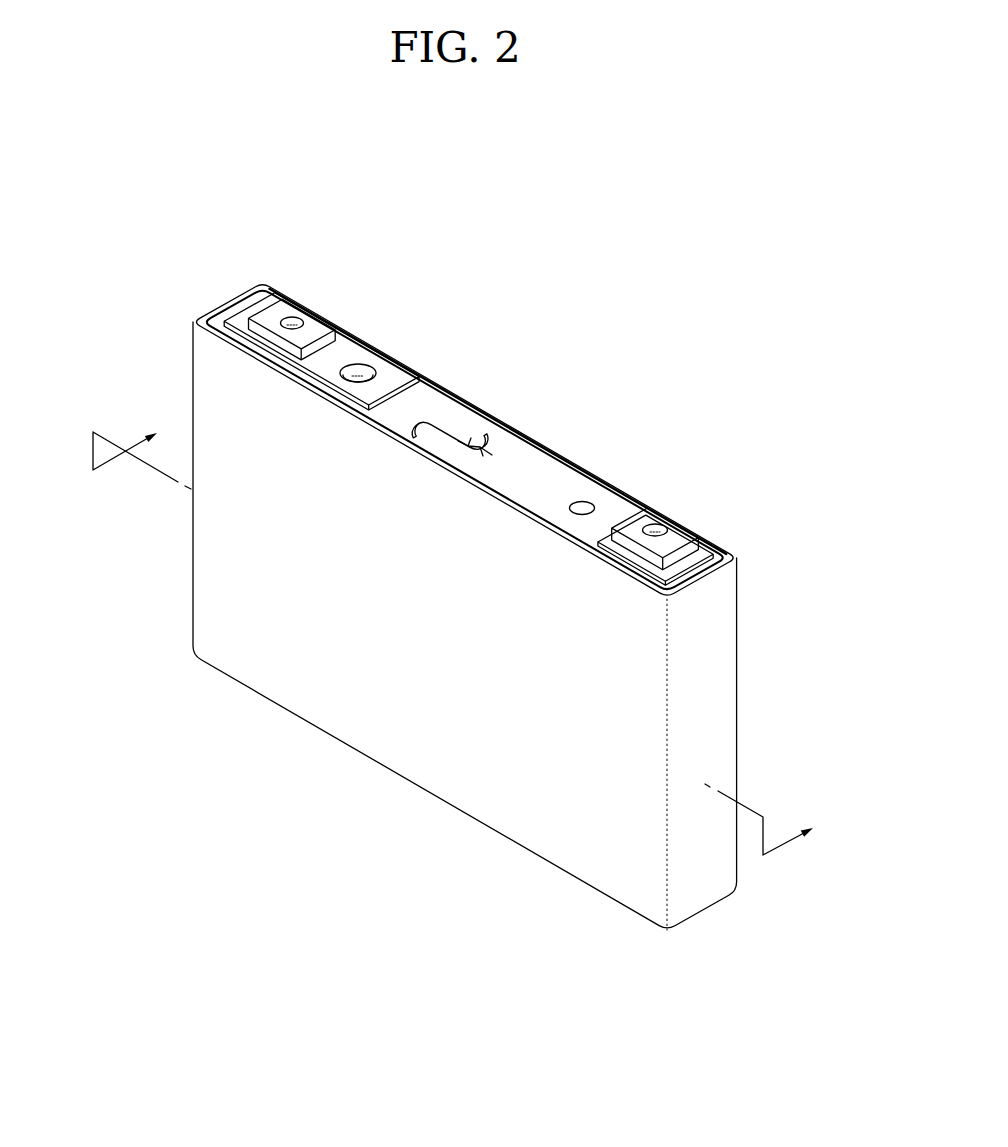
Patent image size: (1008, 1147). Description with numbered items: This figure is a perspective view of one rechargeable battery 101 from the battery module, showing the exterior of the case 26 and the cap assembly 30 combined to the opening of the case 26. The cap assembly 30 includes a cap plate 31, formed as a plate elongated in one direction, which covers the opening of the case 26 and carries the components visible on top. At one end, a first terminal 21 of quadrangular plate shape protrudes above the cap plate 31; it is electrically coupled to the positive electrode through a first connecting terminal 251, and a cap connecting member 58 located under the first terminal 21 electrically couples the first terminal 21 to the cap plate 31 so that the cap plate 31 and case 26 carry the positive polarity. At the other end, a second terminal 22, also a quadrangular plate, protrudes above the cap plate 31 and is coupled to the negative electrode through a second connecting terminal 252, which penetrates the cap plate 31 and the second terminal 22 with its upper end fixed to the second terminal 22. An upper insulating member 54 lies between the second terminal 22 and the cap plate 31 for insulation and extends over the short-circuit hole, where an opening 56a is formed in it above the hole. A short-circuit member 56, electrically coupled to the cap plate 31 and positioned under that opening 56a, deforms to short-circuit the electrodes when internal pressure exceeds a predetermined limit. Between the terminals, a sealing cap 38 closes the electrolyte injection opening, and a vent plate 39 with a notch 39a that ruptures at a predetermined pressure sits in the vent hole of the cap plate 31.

The rechargeable battery 101 is at (461, 575).
The first terminal 21 is at (675, 531).
The second terminal 22 is at (316, 323).
The first connecting terminal 251 is at (654, 526).
The second connecting terminal 252 is at (291, 317).
The case 26 is at (405, 752).
The cap assembly 30 is at (560, 460).
The cap plate 31 is at (442, 408).
The sealing cap 38 is at (585, 500).
The vent plate 39 is at (479, 432).
The notch 39a is at (491, 449).
The upper insulating member 54 is at (247, 317).
The short-circuit member 56 is at (364, 370).
The opening 56a is at (355, 370).
The cap connecting member 58 is at (704, 533).